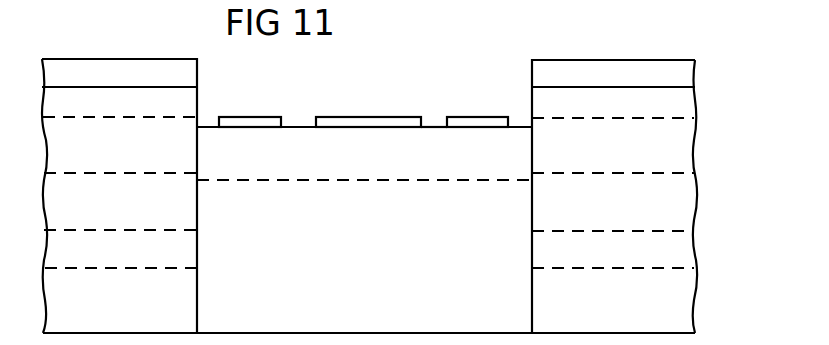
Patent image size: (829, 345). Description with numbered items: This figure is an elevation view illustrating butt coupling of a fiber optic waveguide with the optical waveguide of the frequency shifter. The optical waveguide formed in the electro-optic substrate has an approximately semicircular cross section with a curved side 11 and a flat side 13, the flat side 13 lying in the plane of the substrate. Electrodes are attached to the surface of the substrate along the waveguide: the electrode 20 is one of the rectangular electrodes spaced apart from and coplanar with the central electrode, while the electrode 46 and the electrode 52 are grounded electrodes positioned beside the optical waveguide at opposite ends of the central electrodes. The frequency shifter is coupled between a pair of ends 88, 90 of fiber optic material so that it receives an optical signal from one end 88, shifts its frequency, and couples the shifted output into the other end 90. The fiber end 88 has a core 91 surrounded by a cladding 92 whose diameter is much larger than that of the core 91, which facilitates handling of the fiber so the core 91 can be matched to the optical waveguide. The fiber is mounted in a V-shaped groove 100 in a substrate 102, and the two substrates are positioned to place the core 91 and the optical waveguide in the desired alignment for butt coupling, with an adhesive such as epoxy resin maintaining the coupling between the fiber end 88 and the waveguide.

The curved side 11 is at (293, 182).
The flat side 13 is at (438, 127).
The electrode 20 is at (372, 117).
The electrode 46 is at (471, 117).
The electrode 52 is at (255, 117).
The fiber end 88 is at (530, 66).
The fiber end 90 is at (197, 70).
The core 91 is at (578, 173).
The cladding 92 is at (583, 60).
The V-shaped groove 100 is at (567, 268).
The substrate 102 is at (653, 87).